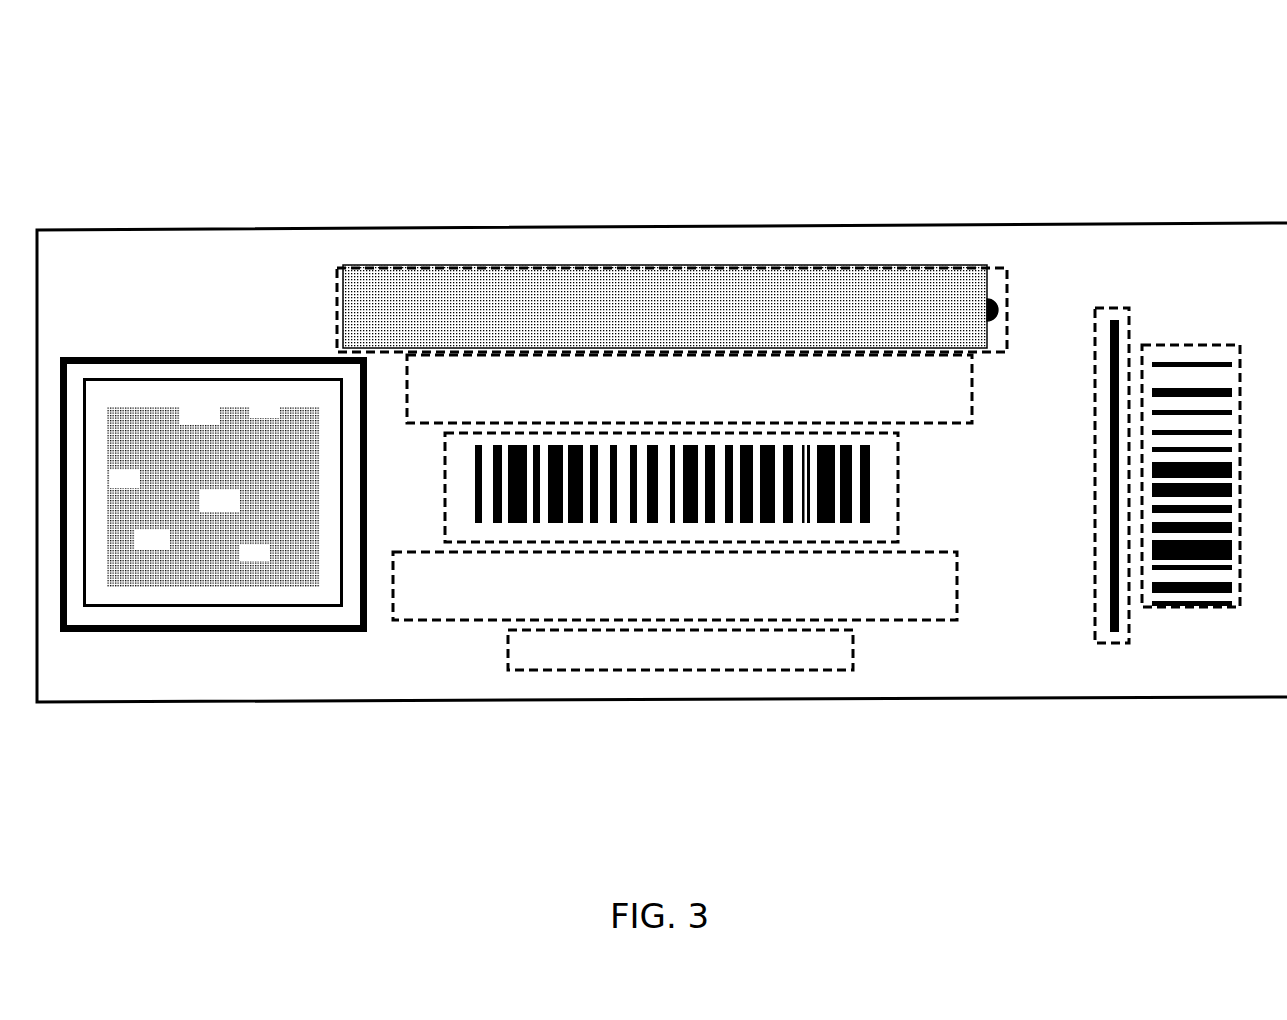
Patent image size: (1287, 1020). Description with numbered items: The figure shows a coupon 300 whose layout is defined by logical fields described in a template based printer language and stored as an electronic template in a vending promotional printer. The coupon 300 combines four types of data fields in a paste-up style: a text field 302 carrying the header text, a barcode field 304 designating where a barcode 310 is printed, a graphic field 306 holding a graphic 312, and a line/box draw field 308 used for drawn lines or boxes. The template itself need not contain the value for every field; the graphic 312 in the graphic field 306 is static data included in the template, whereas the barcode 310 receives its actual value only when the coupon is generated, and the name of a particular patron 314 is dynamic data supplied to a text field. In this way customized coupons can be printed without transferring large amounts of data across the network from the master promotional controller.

The coupon 300 is at (1052, 158).
The text field 302 is at (1008, 281).
The barcode field 304 is at (751, 500).
The graphic field 306 is at (236, 500).
The line/box draw field 308 is at (1088, 573).
The barcode 310 is at (870, 510).
The graphic 312 is at (240, 553).
The name of a particular patron 314 is at (855, 652).